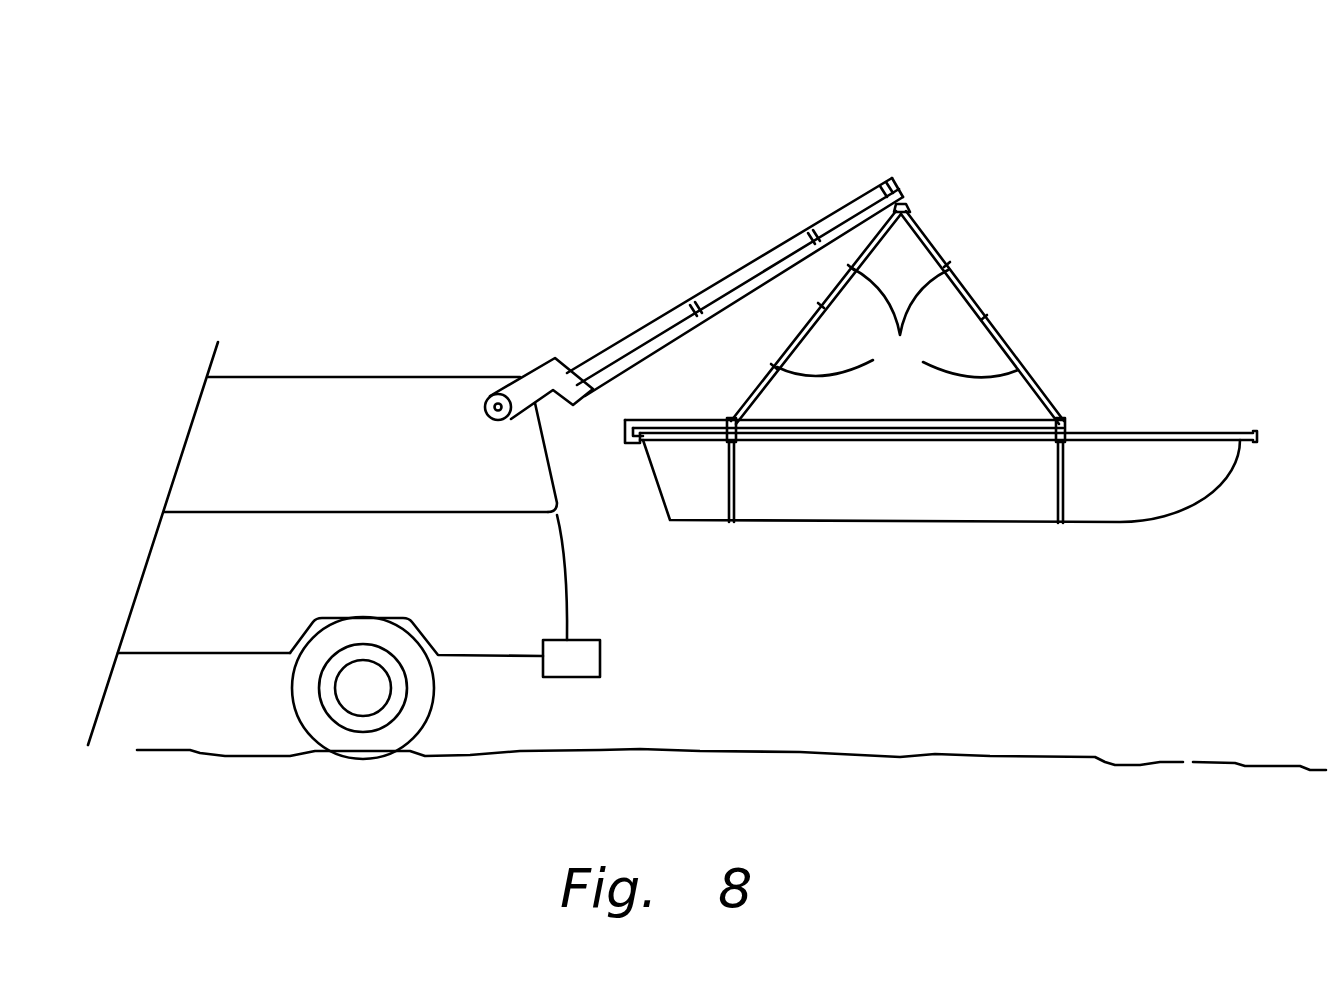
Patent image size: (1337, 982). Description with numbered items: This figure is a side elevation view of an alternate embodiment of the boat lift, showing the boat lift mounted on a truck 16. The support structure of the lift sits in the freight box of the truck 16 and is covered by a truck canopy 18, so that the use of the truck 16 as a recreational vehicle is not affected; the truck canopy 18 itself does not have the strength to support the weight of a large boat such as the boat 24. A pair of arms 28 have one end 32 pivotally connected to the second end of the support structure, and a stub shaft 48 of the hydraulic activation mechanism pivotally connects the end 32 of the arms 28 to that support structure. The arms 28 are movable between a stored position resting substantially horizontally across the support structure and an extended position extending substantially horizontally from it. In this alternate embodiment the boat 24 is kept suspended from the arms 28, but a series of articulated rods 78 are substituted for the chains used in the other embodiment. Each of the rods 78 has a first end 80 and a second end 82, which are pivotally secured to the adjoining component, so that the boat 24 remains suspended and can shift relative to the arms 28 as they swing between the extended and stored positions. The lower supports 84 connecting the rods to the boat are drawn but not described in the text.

The truck 16 is at (497, 610).
The truck canopy 18 is at (330, 415).
The boat 24 is at (1117, 492).
The arms 28 is at (822, 225).
The end of arms 32 is at (547, 373).
The stub shaft 48 is at (502, 394).
The articulated rods 78 is at (897, 317).
The first end of rod 80 is at (906, 207).
The second end of rod 82 is at (1060, 415).
The support posts 84 is at (736, 445).